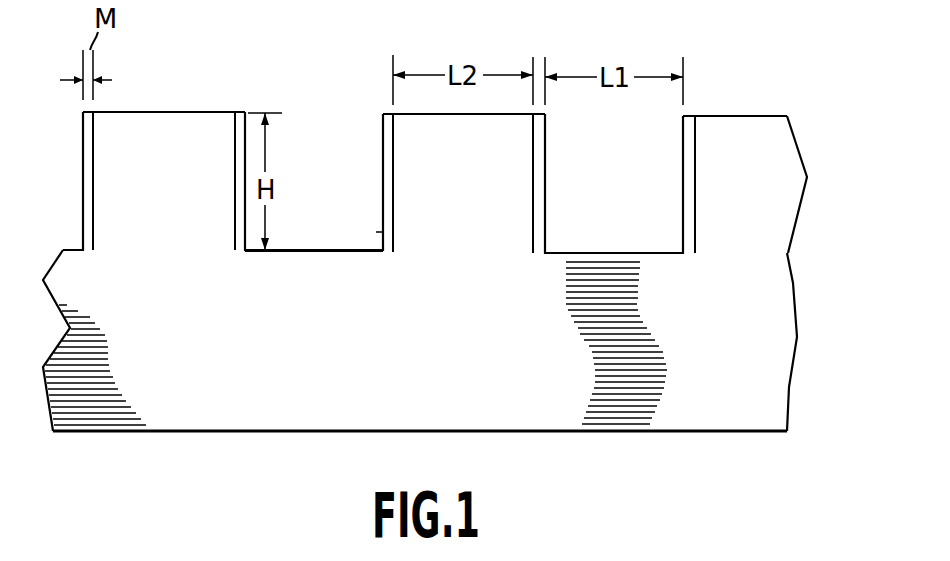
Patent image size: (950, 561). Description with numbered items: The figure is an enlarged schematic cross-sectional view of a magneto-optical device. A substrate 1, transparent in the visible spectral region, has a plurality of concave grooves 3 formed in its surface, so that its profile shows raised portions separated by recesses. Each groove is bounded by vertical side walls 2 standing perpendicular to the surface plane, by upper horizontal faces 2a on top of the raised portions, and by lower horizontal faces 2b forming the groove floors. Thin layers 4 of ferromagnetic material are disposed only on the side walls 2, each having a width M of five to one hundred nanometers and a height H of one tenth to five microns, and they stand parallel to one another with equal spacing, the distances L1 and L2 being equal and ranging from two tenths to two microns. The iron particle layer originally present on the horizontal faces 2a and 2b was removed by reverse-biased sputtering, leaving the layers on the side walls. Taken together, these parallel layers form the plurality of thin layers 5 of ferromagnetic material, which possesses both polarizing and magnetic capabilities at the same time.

The substrate 1 is at (770, 390).
The side wall 2 is at (398, 196).
The horizontal face 2a is at (172, 112).
The horizontal face 2b is at (310, 252).
The concave groove 3 is at (317, 152).
The thin layer of ferromagnetic material 4 is at (388, 223).
The plurality of thin layers of ferromagnetic material 5 is at (840, 118).